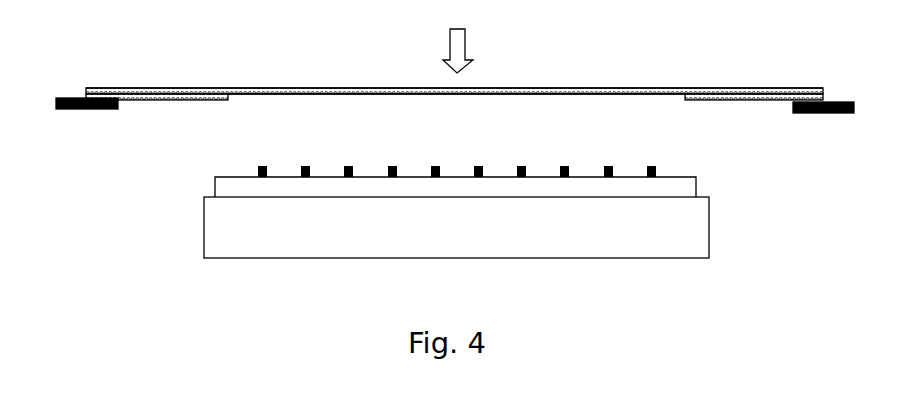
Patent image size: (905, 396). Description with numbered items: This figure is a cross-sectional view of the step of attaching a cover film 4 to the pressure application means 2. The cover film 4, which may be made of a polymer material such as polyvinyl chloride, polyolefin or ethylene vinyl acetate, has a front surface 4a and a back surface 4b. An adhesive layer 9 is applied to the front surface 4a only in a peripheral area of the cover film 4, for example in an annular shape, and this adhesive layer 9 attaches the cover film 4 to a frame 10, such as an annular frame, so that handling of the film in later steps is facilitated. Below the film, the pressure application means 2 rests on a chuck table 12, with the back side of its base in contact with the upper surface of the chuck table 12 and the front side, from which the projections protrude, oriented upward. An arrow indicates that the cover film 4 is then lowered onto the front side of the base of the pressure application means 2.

The pressure application means 2 is at (683, 187).
The cover film 4 is at (454, 93).
The front surface 4a is at (237, 95).
The back surface 4b is at (260, 88).
The adhesive layer 9 is at (173, 103).
The frame 10 is at (80, 96).
The chuck table 12 is at (690, 228).